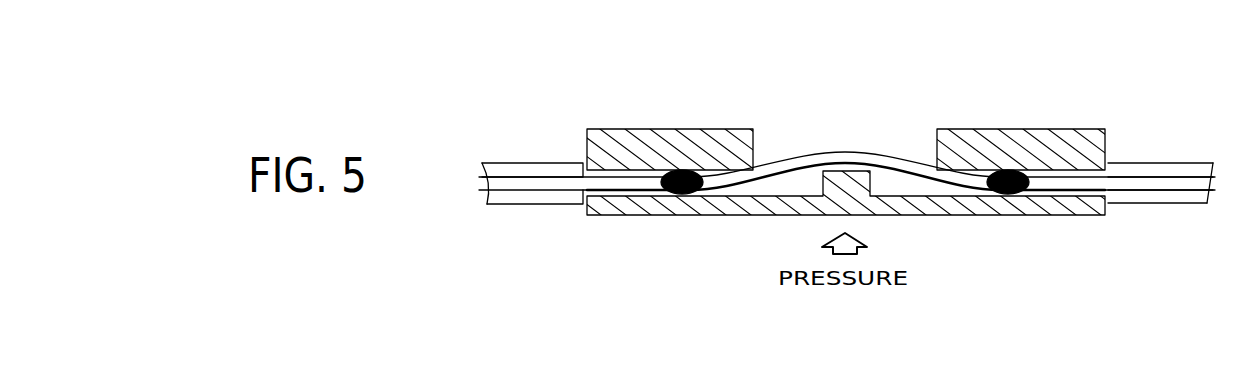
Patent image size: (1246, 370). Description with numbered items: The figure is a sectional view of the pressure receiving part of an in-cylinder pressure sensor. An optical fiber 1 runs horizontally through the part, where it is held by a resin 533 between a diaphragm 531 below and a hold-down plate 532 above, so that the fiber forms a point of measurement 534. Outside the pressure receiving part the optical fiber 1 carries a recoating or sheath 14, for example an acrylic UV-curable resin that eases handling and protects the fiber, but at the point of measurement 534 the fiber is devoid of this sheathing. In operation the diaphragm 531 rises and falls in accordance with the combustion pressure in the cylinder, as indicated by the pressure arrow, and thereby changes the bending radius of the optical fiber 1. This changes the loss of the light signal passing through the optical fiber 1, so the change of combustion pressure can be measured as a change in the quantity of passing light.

The optical fiber 1 is at (523, 183).
The sheath 14 is at (533, 163).
The diaphragm 531 is at (1005, 215).
The hold-down plate 532 is at (1029, 129).
The resin 533 is at (681, 193).
The point of measurement 534 is at (848, 152).